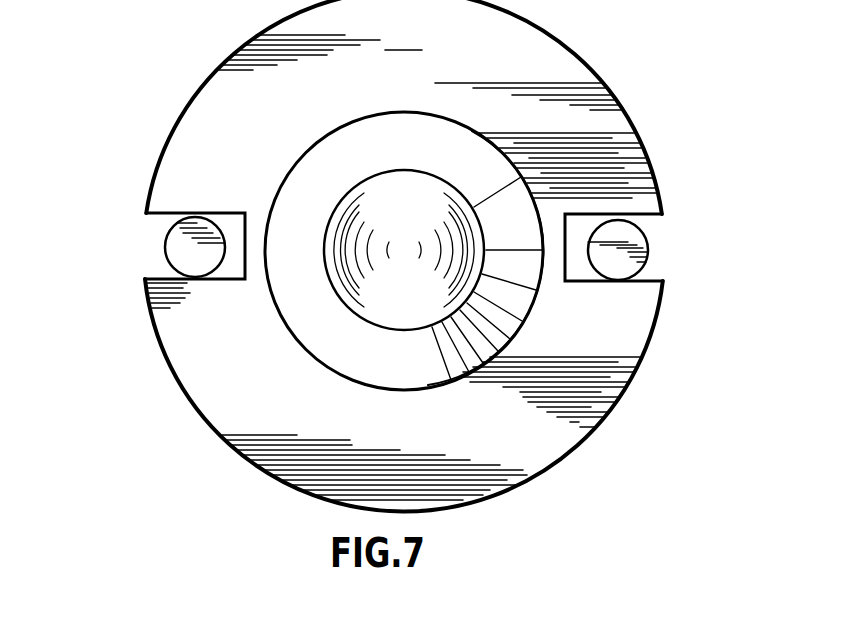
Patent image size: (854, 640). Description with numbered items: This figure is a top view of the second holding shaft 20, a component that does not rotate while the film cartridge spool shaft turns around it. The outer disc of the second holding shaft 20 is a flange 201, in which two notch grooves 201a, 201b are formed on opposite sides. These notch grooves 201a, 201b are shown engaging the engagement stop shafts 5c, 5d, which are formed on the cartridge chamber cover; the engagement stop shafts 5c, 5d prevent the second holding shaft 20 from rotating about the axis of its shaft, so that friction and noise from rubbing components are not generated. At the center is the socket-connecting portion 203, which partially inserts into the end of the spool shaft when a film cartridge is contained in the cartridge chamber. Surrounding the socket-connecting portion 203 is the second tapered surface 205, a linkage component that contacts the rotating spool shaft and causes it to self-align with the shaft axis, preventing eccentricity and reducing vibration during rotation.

The second holding shaft 20 is at (603, 433).
The flange 201 is at (617, 132).
The notch groove 201a is at (165, 213).
The notch groove 201b is at (663, 217).
The engagement stop shaft 5c is at (612, 263).
The engagement stop shaft 5d is at (198, 262).
The socket-connecting portion 203 is at (368, 311).
The second tapered surface 205 is at (295, 335).